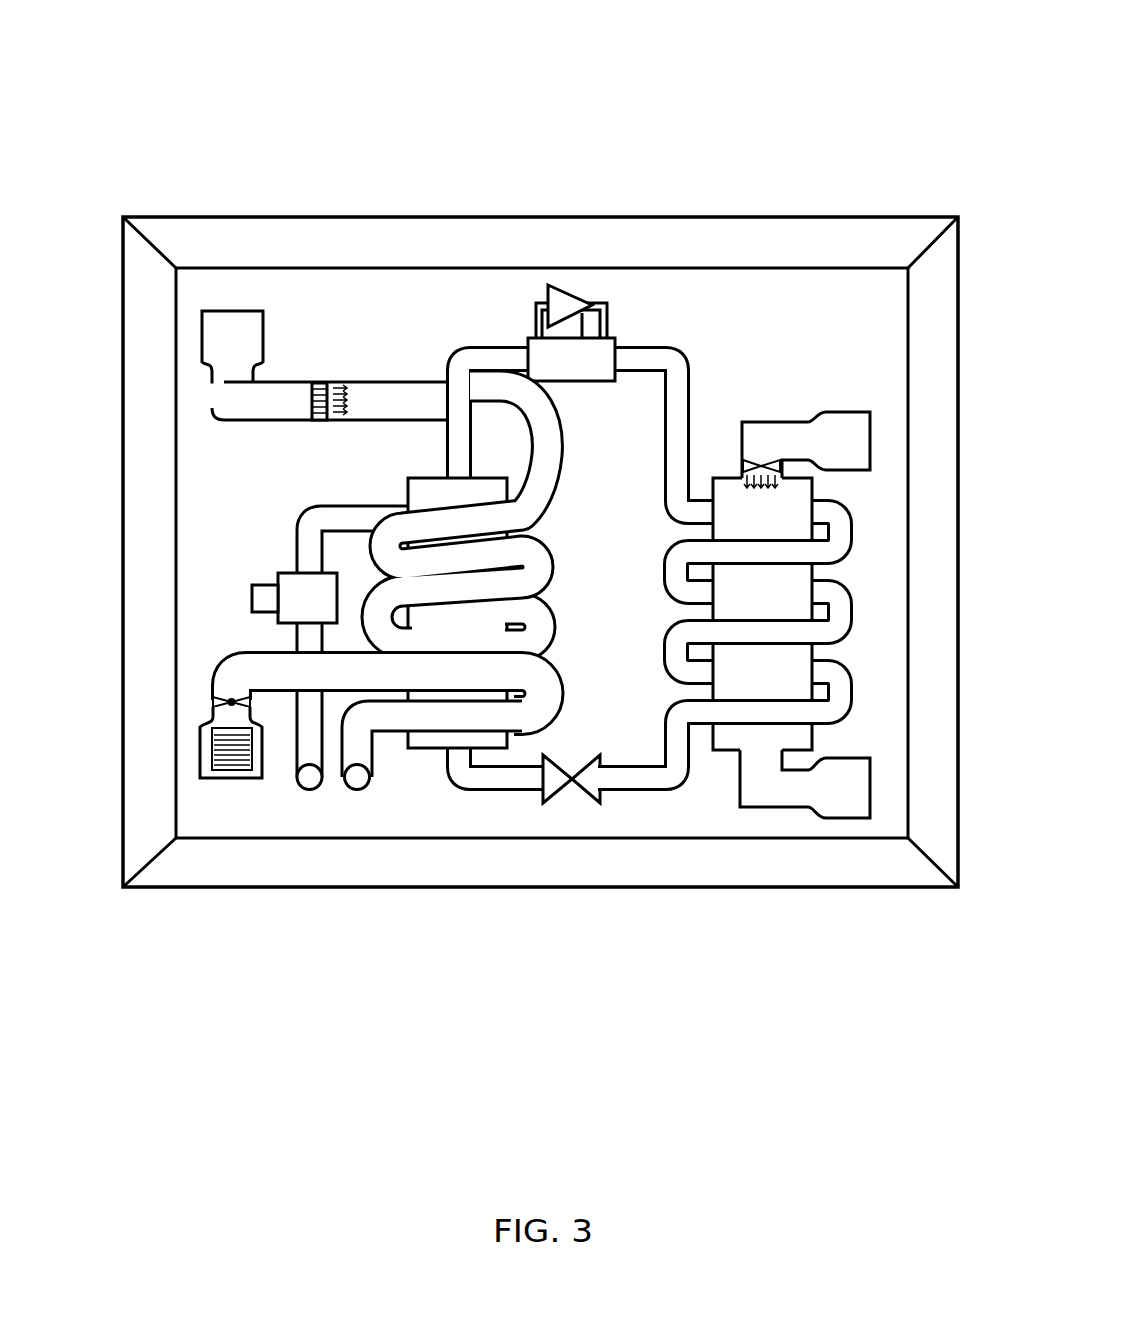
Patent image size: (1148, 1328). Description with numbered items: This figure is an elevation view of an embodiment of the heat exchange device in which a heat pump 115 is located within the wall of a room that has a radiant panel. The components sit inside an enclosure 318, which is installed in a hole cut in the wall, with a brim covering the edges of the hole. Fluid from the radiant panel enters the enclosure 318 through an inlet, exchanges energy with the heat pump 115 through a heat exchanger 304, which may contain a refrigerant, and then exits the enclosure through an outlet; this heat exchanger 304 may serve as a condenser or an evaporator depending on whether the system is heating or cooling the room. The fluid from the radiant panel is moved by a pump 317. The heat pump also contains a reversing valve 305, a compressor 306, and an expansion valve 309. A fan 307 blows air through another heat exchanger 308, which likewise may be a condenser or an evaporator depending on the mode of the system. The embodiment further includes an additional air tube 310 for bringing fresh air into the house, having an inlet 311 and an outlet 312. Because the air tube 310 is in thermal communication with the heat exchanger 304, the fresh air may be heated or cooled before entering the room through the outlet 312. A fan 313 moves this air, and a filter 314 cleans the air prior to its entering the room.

The heat pump 115 is at (647, 75).
The enclosure 318 is at (260, 215).
The inlet 311 is at (200, 327).
The filter 314 is at (318, 384).
The air tube 310 is at (402, 398).
The compressor 306 is at (563, 297).
The reversing valve 305 is at (605, 347).
The fan 307 is at (762, 462).
The heat exchanger 308 is at (722, 510).
The heat exchanger 304 is at (422, 487).
The pump 317 is at (287, 573).
The fan 313 is at (222, 700).
The outlet 312 is at (200, 752).
The expansion valve 309 is at (582, 783).